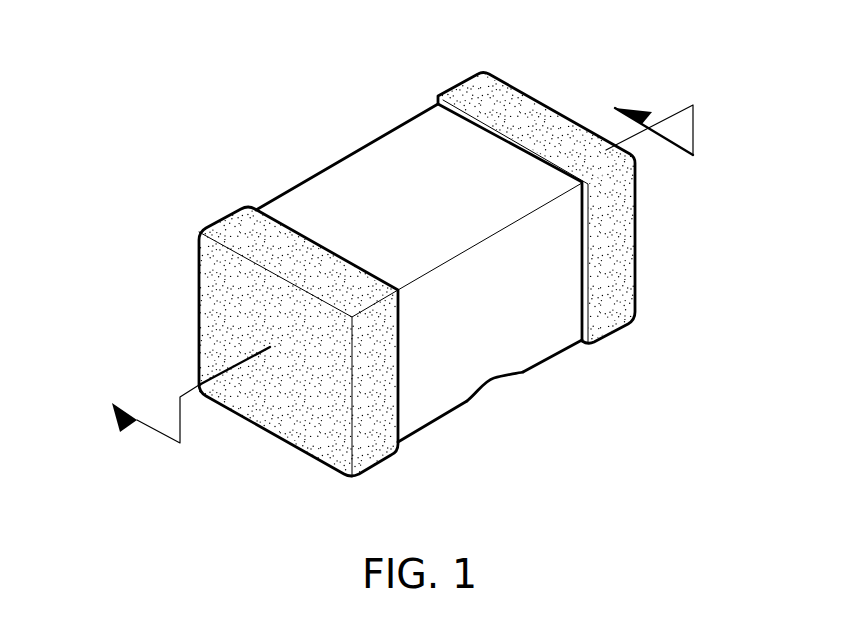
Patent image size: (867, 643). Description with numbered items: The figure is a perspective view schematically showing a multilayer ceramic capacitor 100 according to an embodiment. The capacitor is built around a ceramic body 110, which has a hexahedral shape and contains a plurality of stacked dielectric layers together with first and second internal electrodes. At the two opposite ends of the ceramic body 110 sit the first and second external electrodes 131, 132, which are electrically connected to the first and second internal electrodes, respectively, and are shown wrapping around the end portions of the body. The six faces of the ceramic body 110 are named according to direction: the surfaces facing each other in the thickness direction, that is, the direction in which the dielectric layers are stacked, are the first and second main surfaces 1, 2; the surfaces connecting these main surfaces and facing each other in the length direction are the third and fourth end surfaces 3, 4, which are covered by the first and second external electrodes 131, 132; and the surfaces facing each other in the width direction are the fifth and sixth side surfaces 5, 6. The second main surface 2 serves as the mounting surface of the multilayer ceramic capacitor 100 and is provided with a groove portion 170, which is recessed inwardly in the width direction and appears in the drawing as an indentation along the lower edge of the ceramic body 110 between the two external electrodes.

The multilayer ceramic capacitor 100 is at (166, 51).
The first main surface 1 is at (413, 143).
The second main surface 2 is at (432, 396).
The third end surface 3 is at (210, 340).
The fourth end surface 4 is at (614, 219).
The fifth side surface 5 is at (334, 193).
The sixth side surface 6 is at (531, 350).
The ceramic body 110 is at (500, 168).
The first external electrode 131 is at (208, 280).
The second external electrode 132 is at (625, 283).
The groove portion 170 is at (490, 382).